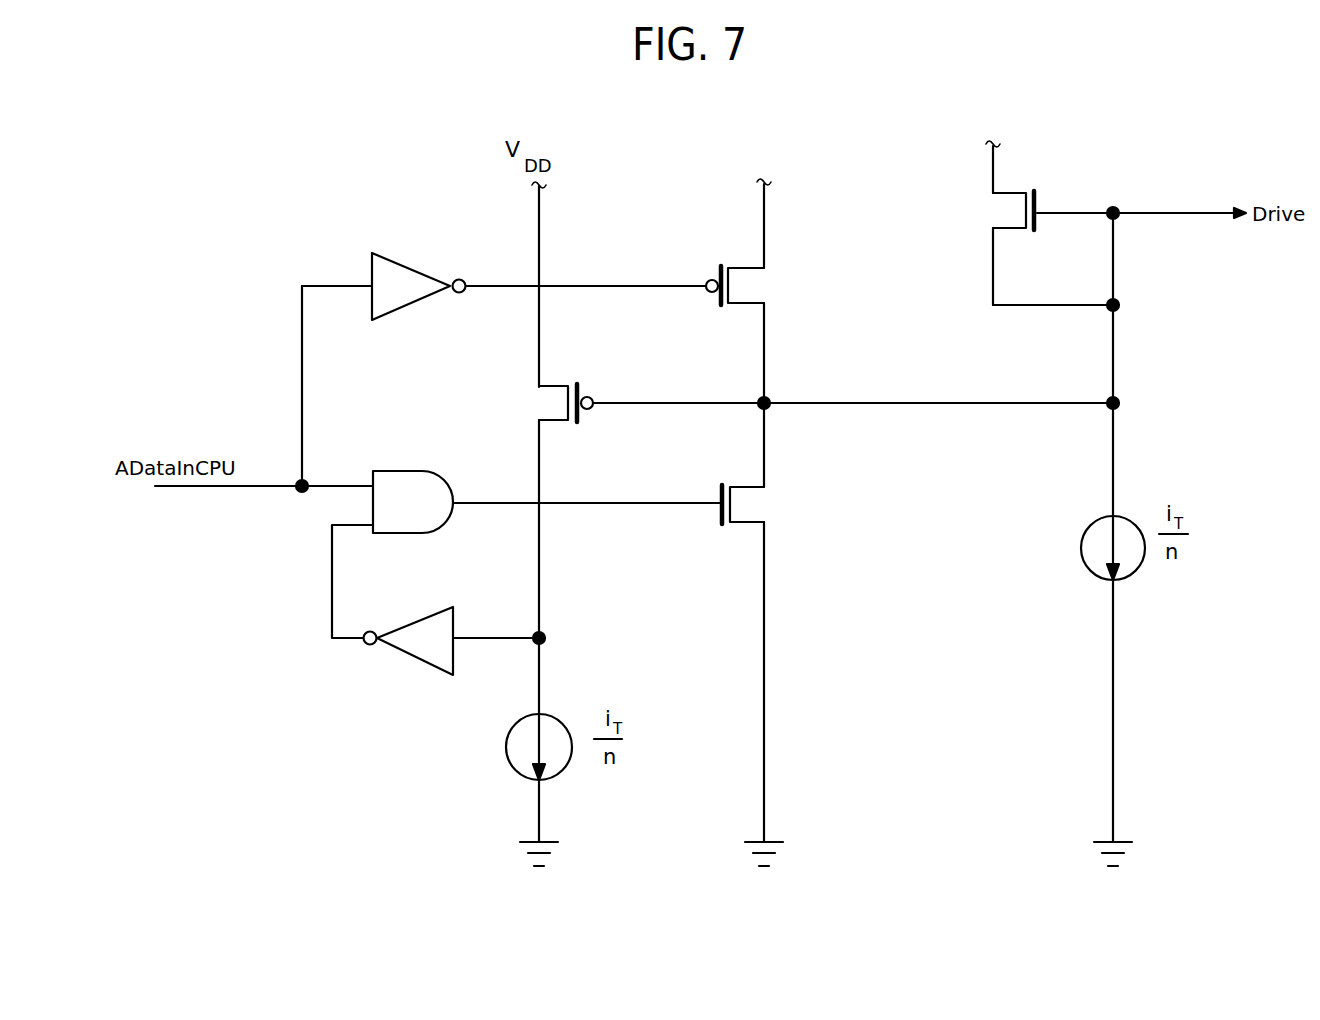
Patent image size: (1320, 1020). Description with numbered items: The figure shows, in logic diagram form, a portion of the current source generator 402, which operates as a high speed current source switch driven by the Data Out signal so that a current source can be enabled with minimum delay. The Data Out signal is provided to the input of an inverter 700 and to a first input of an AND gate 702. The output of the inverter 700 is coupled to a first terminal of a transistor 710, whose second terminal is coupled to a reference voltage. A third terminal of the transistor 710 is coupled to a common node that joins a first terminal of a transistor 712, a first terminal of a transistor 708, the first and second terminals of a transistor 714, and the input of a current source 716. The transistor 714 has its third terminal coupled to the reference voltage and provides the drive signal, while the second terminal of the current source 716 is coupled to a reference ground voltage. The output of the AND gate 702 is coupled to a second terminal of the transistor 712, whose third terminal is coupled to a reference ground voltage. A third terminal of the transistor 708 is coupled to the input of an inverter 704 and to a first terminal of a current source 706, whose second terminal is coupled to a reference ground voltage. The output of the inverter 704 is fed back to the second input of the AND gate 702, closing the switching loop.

The current source generator 402 is at (270, 225).
The inverter 700 is at (402, 268).
The AND gate 702 is at (398, 471).
The inverter 704 is at (423, 620).
The current source 706 is at (512, 762).
The transistor 708 is at (543, 391).
The transistor 710 is at (750, 270).
The transistor 712 is at (752, 490).
The transistor 714 is at (1005, 197).
The current source 716 is at (1085, 536).